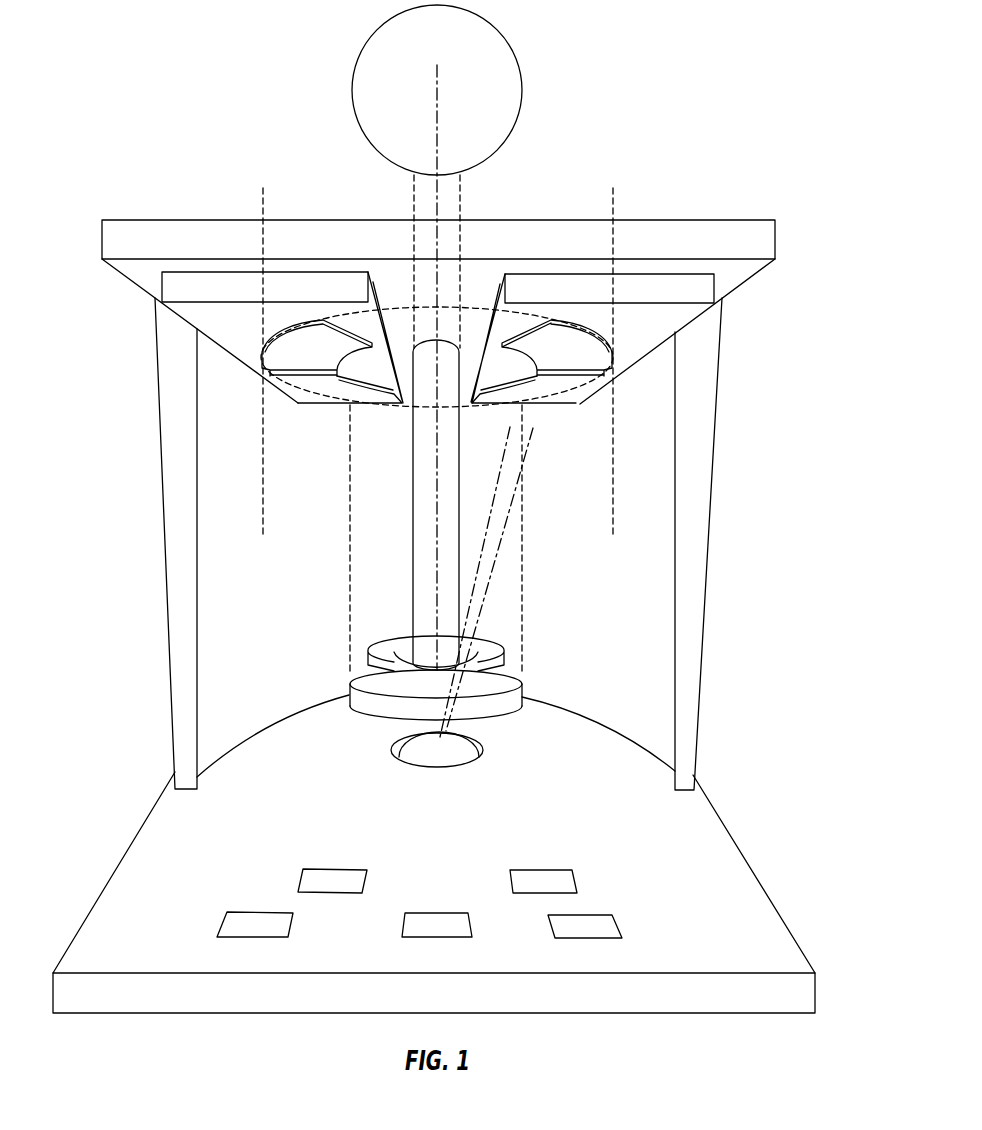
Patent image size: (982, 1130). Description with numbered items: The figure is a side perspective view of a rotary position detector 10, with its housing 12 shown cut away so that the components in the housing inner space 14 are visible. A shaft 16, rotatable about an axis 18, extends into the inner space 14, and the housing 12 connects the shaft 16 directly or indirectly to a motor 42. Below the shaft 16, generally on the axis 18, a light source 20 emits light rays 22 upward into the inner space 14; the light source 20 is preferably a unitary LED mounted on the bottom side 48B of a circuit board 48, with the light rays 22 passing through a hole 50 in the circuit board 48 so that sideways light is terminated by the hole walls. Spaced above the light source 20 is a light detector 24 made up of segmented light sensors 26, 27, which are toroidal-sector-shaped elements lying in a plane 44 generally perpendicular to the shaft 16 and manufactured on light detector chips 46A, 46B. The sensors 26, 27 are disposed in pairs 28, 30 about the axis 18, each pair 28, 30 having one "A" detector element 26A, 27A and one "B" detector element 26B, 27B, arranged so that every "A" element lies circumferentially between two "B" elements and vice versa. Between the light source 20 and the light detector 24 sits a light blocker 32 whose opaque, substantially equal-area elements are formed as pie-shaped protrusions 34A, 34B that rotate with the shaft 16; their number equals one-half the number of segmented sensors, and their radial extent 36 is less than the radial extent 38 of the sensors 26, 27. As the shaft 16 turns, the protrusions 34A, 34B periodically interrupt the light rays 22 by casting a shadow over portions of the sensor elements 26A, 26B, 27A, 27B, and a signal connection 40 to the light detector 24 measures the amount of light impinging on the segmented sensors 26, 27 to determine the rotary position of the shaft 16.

The rotary position detector 10 is at (622, 205).
The housing 12 is at (725, 465).
The inner space 14 is at (640, 550).
The shaft 16 is at (410, 498).
The axis 18 is at (437, 454).
The light source 20 is at (422, 760).
The light rays 22 is at (498, 548).
The light detector 24 is at (630, 348).
The segmented light sensor 26 is at (542, 310).
The "A" detector element 26A is at (565, 388).
The "B" detector element 26B is at (542, 342).
The segmented light sensor 27 is at (252, 324).
The "A" detector element 27A is at (312, 340).
The "B" detector element 27B is at (308, 385).
The pair 28 is at (610, 398).
The pair 30 is at (232, 371).
The light blocker 32 is at (380, 714).
The pie-shaped protrusion 34A is at (497, 658).
The pie-shaped protrusion 34B is at (497, 702).
The radial extent 36 is at (350, 587).
The radial extent 38 is at (258, 322).
The signal connection 40 is at (603, 882).
The motor 42 is at (514, 100).
The plane 44 is at (397, 307).
The light detector chip 46A is at (205, 287).
The light detector chip 46B is at (673, 283).
The circuit board 48 is at (181, 828).
The bottom side 48B is at (583, 1017).
The hole 50 is at (478, 757).